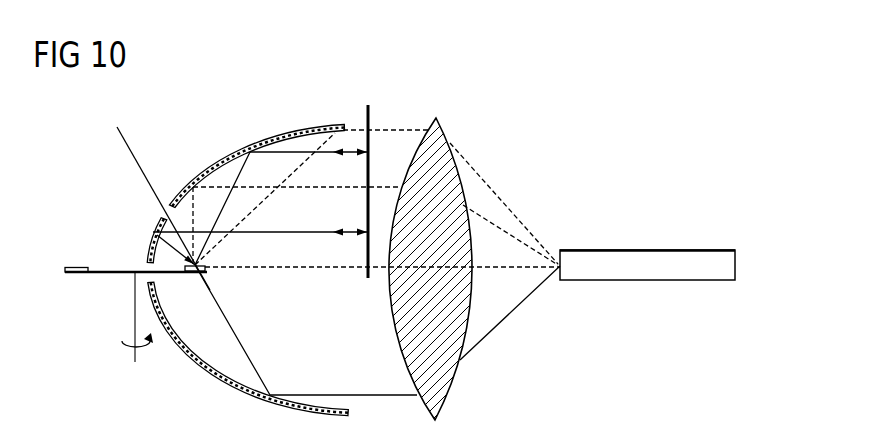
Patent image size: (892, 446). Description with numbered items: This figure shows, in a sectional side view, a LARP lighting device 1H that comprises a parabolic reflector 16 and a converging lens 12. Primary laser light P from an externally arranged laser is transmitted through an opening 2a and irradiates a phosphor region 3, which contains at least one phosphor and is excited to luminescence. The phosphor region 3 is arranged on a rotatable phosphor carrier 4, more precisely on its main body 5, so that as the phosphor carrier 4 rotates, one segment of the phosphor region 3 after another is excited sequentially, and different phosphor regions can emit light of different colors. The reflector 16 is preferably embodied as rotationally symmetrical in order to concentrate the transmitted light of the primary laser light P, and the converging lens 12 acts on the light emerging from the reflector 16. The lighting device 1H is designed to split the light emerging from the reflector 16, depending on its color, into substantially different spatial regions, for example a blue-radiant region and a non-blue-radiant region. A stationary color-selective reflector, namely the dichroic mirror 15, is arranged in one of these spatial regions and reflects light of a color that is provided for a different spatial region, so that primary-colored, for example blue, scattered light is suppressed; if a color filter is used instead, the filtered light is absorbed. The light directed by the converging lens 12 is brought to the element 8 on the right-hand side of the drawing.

The lighting device 1H is at (520, 104).
The primary laser light P is at (128, 152).
The reflector 16 is at (291, 128).
The dichroic mirror 15 is at (370, 109).
The converging lens 12 is at (443, 393).
The detector / specimen 8 is at (647, 250).
The main body 5 is at (112, 270).
The phosphor region 3 is at (78, 267).
The opening 2a is at (160, 200).
The phosphor carrier 4 is at (112, 296).